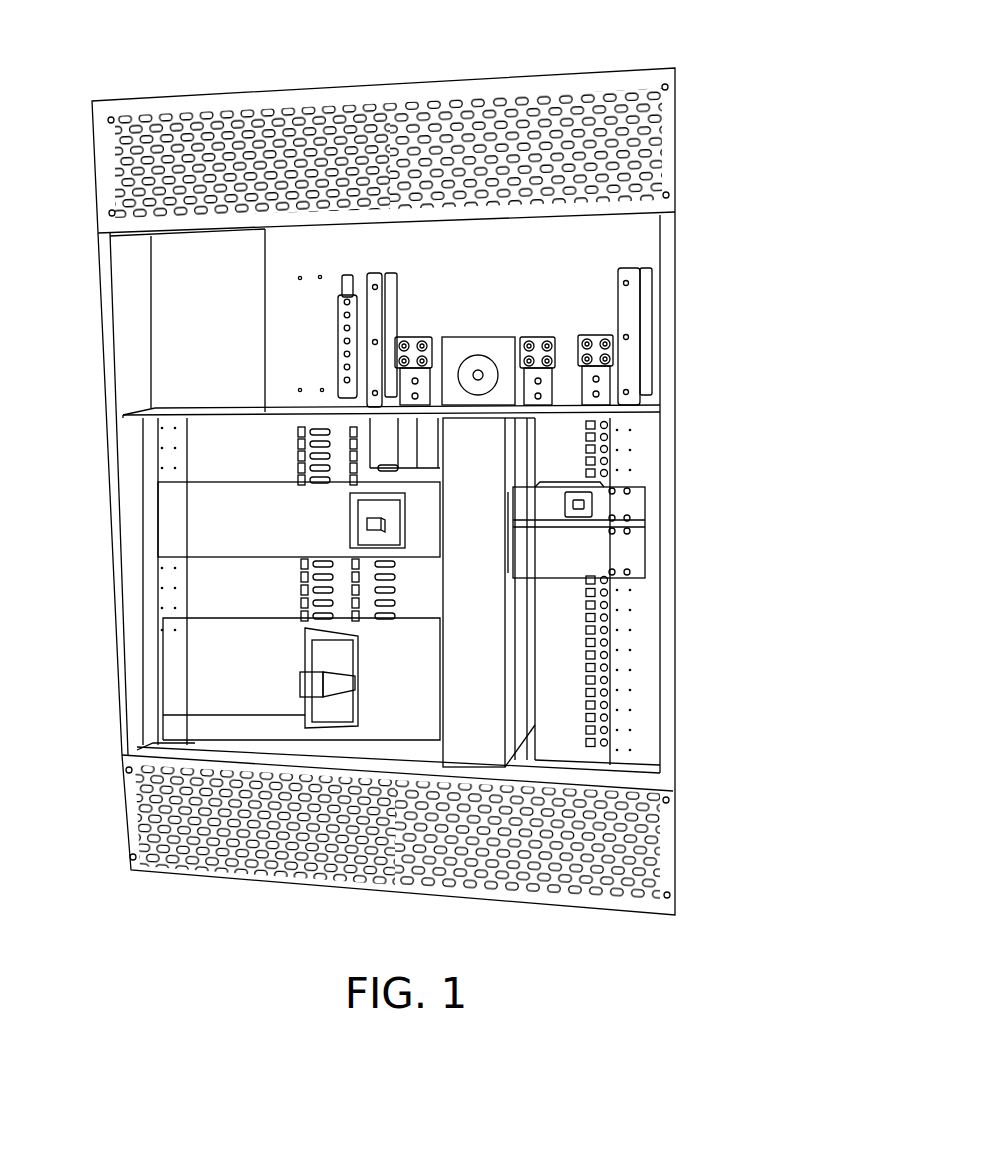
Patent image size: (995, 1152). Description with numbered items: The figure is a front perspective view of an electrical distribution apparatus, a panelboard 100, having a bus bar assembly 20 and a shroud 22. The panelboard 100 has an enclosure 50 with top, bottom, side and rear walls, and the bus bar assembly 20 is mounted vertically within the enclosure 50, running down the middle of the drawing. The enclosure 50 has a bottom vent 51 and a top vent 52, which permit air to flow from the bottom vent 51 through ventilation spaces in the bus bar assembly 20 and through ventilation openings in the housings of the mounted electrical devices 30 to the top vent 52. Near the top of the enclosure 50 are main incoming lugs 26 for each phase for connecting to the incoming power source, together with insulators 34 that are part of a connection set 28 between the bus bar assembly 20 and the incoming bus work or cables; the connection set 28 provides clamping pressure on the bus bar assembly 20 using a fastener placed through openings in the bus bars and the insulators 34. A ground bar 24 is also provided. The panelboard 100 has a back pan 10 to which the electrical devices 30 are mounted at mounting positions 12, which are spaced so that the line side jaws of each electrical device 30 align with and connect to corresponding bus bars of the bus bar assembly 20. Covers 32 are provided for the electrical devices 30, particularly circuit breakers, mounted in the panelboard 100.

The panelboard 100 is at (134, 45).
The enclosure 50 is at (396, 84).
The top vent 52 is at (679, 128).
The bottom vent 51 is at (662, 832).
The main incoming lugs 26 is at (416, 334).
The insulators 34 is at (470, 334).
The connection set 28 is at (485, 375).
The ground bar 24 is at (333, 322).
The back pan 10 is at (275, 452).
The mounting positions 12 is at (622, 458).
The electrical devices 30 is at (345, 515).
The bus bar assembly 20 is at (490, 597).
The shroud 22 is at (545, 645).
The covers 32 is at (160, 540).